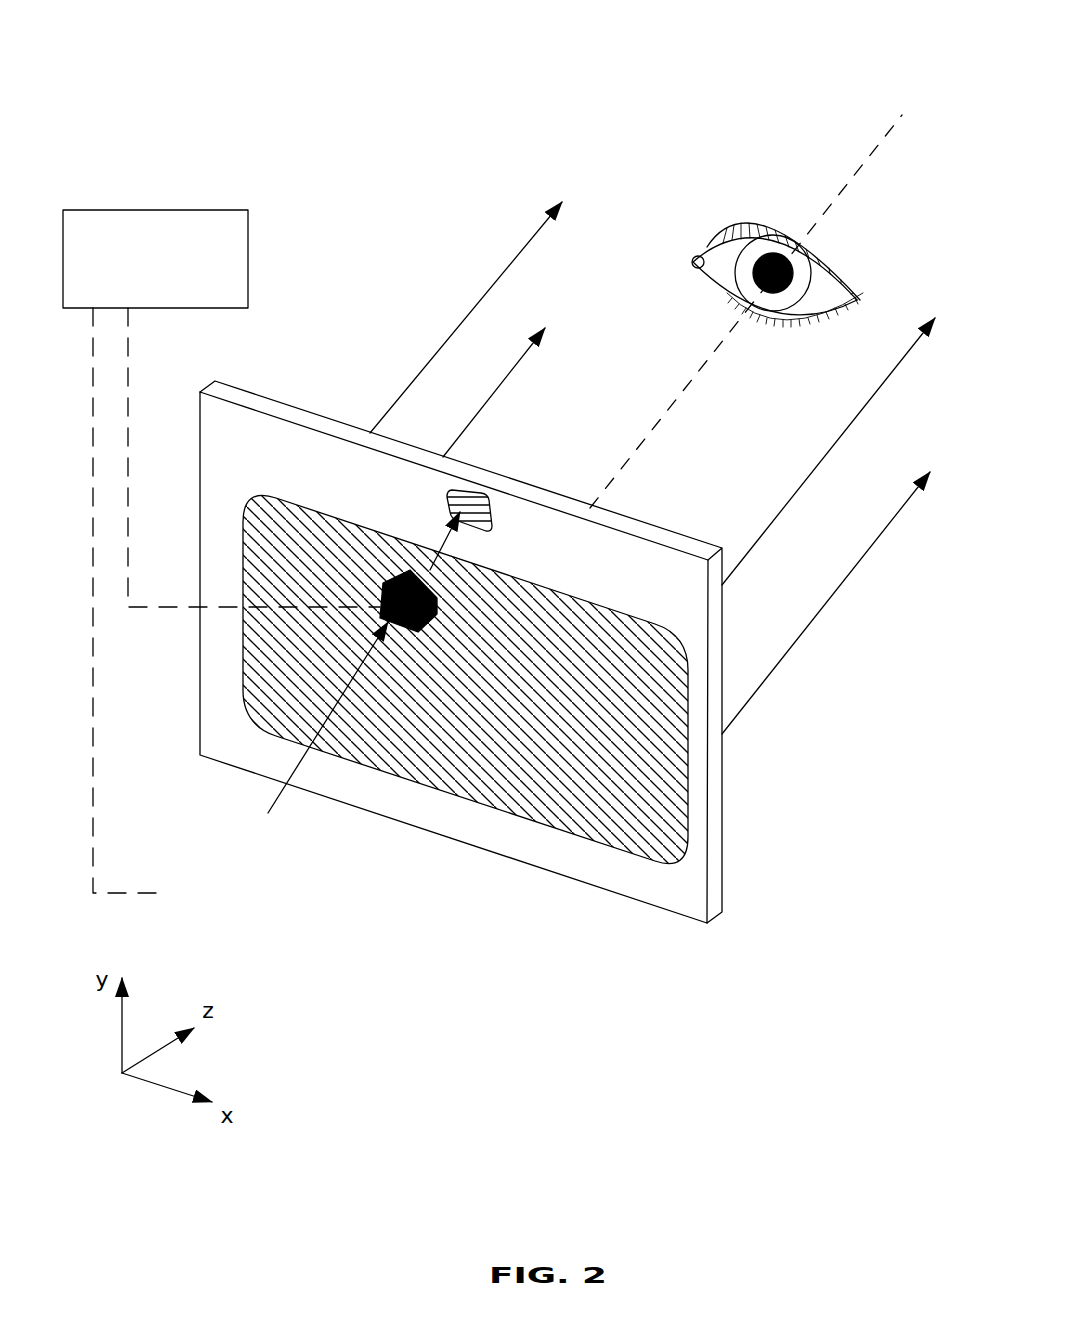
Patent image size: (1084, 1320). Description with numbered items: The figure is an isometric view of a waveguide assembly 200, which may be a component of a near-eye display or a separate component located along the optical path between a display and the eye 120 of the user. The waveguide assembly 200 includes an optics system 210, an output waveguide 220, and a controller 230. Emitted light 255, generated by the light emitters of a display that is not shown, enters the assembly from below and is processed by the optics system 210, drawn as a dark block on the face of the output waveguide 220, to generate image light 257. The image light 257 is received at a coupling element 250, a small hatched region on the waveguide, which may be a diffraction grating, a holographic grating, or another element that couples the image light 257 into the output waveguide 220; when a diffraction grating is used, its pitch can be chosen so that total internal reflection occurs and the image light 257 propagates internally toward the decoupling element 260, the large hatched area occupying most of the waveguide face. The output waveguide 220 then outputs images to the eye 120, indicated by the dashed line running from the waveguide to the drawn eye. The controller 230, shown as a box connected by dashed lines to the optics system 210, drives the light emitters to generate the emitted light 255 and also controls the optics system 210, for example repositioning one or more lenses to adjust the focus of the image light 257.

The waveguide assembly 200 is at (205, 84).
The controller 230 is at (221, 551).
The output waveguide 220 is at (723, 760).
The decoupling element 260 is at (685, 835).
The optics system 210 is at (377, 593).
The emitted light 255 is at (279, 768).
The image light 257 is at (440, 557).
The coupling element 250 is at (463, 503).
The eye 120 is at (746, 311).